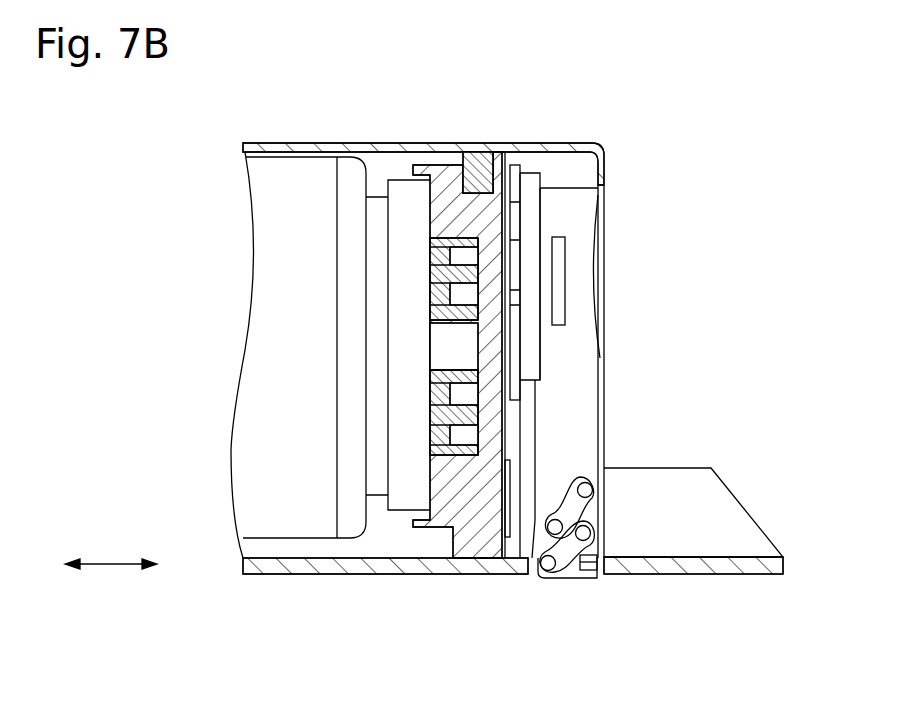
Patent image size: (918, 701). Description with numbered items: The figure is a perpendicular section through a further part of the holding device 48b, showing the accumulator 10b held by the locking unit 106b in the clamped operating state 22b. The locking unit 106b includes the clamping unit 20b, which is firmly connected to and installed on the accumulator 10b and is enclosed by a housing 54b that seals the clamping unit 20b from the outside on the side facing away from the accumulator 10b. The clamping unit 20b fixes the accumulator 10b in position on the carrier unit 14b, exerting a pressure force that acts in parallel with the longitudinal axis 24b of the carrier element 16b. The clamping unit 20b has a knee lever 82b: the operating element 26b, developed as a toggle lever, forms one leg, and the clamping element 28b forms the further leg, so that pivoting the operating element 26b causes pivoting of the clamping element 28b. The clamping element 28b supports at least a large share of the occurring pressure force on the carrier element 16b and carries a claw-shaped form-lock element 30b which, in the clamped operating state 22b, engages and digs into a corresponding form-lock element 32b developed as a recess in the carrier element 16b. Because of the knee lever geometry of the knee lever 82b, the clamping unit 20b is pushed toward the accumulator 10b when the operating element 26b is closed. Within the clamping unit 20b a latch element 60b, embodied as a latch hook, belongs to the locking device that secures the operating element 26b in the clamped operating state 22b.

The locking unit 106b is at (645, 103).
The housing 54b is at (560, 142).
The clamping unit 20b is at (669, 188).
The clamped operating state 22b is at (635, 231).
The accumulator 10b is at (272, 254).
The holding device 48b is at (172, 355).
The latch element 60b is at (558, 272).
The operating element 26b is at (588, 372).
The knee lever 82b is at (557, 500).
The carrier unit 14b is at (705, 481).
The carrier element 16b is at (733, 526).
The longitudinal axis 24b is at (112, 566).
The corresponding form-lock element 32b is at (532, 576).
The clamping element 28b is at (562, 578).
The form-lock element 30b is at (594, 566).